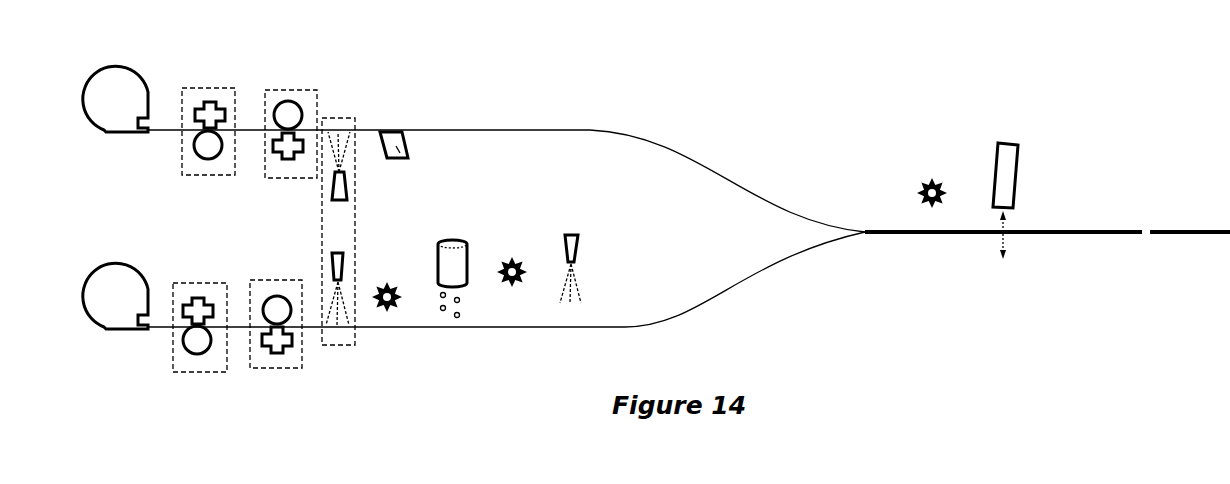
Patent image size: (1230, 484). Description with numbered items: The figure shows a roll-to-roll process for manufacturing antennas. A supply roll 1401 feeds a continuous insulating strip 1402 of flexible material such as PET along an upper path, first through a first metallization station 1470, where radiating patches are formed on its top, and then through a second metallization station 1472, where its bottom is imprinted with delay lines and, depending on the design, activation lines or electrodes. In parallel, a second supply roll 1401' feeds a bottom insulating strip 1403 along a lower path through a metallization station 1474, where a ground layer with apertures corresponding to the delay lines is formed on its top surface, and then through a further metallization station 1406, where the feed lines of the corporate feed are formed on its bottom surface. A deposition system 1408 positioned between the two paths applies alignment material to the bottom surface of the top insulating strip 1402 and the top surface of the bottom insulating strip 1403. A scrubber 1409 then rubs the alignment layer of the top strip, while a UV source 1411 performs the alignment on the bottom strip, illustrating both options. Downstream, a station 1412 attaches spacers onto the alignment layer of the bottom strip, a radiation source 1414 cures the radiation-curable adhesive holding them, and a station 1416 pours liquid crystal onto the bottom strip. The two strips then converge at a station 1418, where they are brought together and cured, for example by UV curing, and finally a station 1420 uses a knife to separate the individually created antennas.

The supply roll 1401 is at (144, 85).
The supply roll 1401' is at (147, 279).
The first metallization station 1470 is at (212, 88).
The second metallization station 1472 is at (317, 92).
The metallization station 1474 is at (185, 283).
The metallization station 1406 is at (263, 368).
The deposition system 1408 is at (340, 228).
The insulating strip 1402 is at (370, 130).
The insulating strip 1403 is at (635, 328).
The scrubber 1409 is at (408, 158).
The UV source 1411 is at (390, 310).
The station 1412 is at (447, 240).
The radiation source 1414 is at (519, 258).
The station 1416 is at (578, 238).
The station 1418 is at (927, 180).
The station 1420 is at (1000, 143).